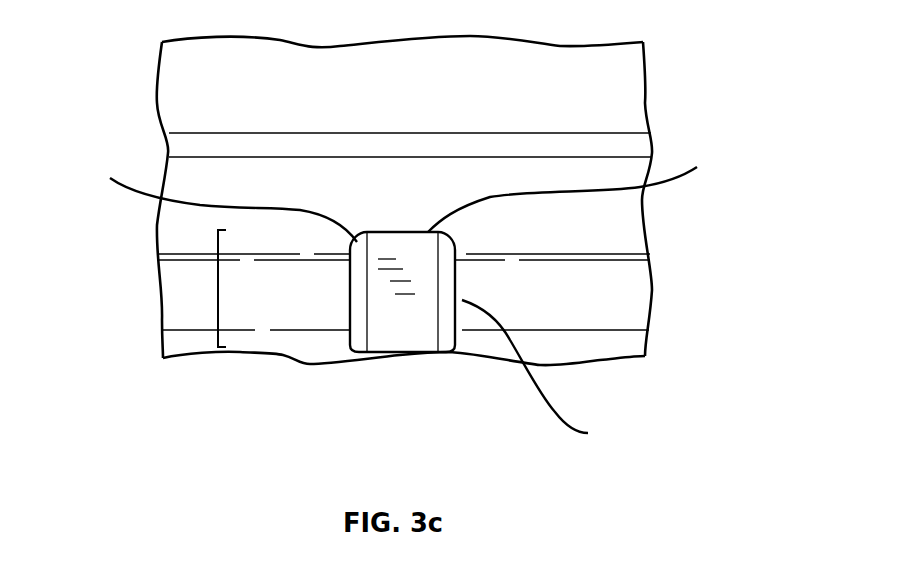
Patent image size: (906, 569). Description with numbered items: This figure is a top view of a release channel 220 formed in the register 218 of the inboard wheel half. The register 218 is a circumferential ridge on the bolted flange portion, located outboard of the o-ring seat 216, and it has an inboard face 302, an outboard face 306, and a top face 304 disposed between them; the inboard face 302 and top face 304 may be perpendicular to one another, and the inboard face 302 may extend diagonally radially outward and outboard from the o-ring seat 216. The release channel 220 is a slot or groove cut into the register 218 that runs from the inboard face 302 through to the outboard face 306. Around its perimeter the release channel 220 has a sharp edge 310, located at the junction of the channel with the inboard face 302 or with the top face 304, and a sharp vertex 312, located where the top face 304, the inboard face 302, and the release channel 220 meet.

The o-ring seat 216 is at (575, 174).
The register 218 is at (217, 290).
The release channel 220 is at (403, 318).
The inboard face 302 is at (463, 242).
The top face 304 is at (588, 310).
The outboard face 306 is at (603, 342).
The sharp edge 310 is at (406, 298).
The sharp vertex 312 is at (350, 255).